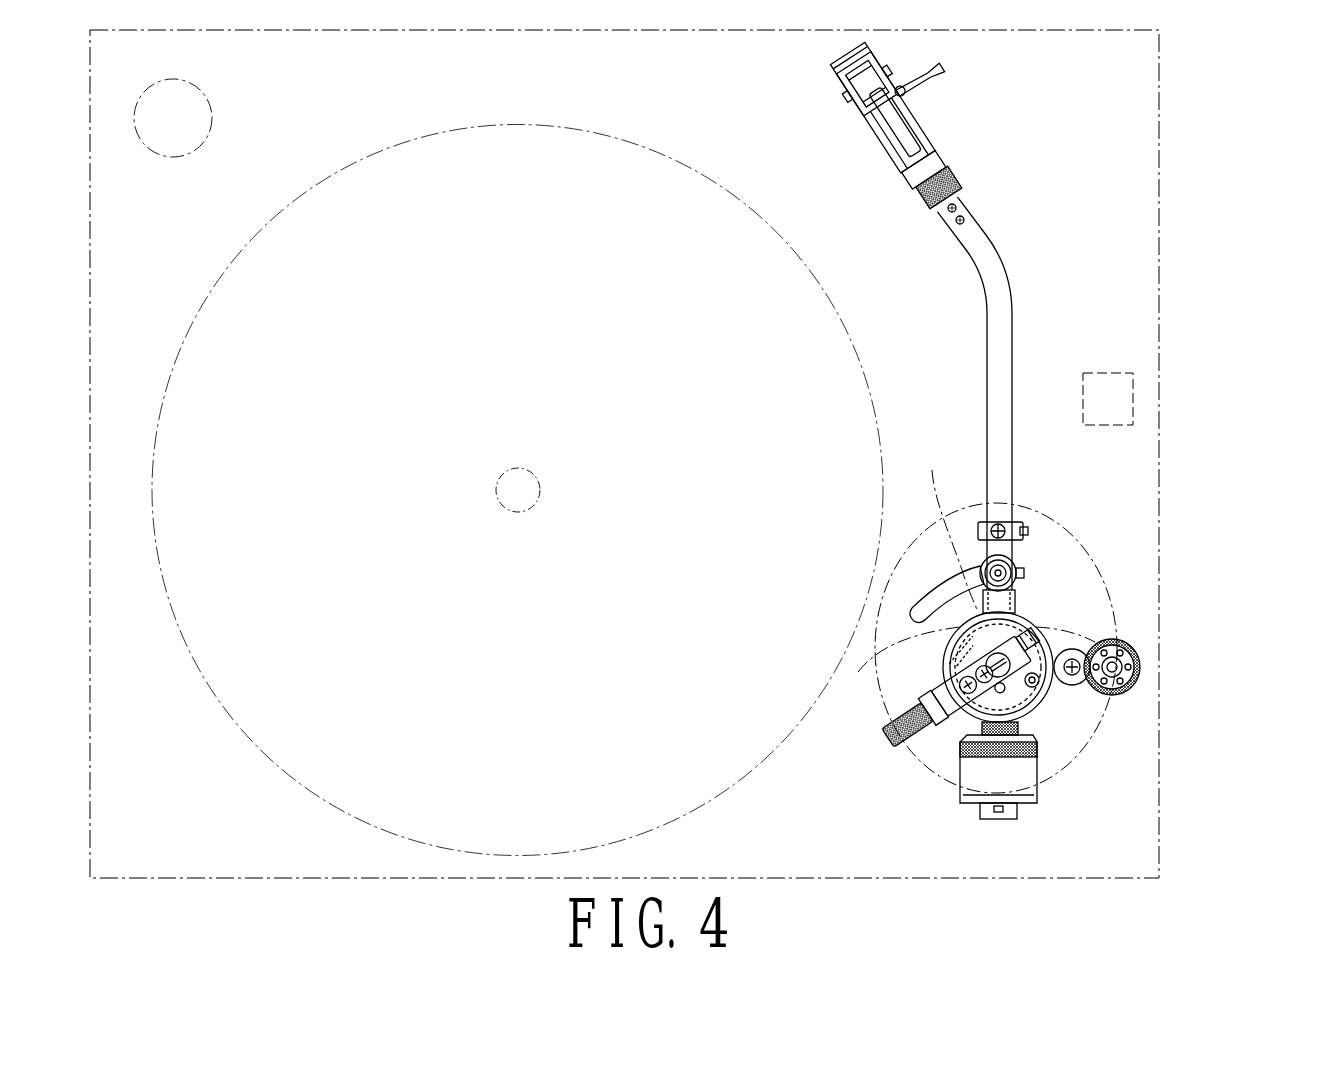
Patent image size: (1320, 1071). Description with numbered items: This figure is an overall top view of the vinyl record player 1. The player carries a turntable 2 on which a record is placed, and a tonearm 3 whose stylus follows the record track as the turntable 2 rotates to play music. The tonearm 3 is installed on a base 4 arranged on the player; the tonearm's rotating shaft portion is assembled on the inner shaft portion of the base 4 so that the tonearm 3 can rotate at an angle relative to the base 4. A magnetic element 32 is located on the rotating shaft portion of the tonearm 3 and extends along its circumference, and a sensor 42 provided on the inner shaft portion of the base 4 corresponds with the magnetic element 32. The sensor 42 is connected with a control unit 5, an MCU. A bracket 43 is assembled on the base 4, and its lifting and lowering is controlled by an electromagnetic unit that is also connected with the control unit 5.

The vinyl record player 1 is at (133, 320).
The turntable 2 is at (207, 603).
The tonearm 3 is at (1000, 332).
The base 4 is at (940, 789).
The control unit 5 is at (1125, 397).
The magnetic element 32 is at (1045, 635).
The sensor 42 is at (965, 620).
The bracket 43 is at (942, 515).